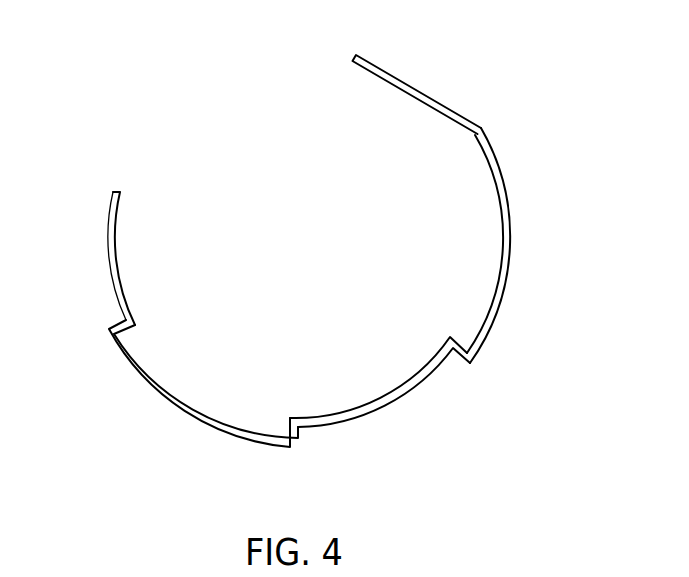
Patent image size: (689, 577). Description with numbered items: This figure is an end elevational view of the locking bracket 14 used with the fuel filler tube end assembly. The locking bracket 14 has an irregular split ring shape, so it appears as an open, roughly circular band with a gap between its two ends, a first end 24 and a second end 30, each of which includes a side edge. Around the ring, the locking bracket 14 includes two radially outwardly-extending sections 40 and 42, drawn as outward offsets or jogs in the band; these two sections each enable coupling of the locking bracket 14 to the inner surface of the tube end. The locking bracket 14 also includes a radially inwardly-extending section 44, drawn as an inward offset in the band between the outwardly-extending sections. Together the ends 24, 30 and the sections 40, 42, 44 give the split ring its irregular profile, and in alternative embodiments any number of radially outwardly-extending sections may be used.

The locking bracket 14 is at (133, 93).
The first end 24 is at (108, 254).
The second end 30 is at (418, 90).
The radially outwardly-extending section 40 is at (157, 393).
The radially outwardly-extending section 42 is at (510, 237).
The radially inwardly-extending section 44 is at (412, 388).